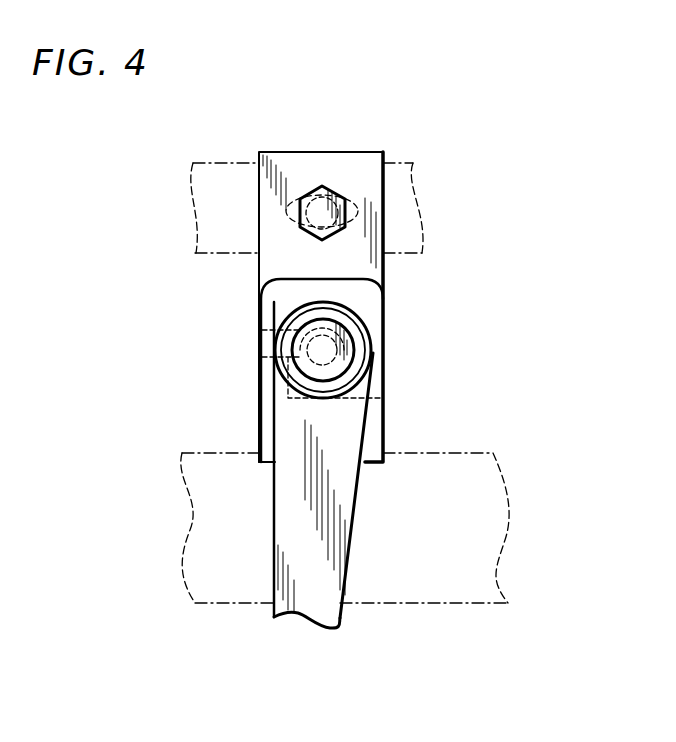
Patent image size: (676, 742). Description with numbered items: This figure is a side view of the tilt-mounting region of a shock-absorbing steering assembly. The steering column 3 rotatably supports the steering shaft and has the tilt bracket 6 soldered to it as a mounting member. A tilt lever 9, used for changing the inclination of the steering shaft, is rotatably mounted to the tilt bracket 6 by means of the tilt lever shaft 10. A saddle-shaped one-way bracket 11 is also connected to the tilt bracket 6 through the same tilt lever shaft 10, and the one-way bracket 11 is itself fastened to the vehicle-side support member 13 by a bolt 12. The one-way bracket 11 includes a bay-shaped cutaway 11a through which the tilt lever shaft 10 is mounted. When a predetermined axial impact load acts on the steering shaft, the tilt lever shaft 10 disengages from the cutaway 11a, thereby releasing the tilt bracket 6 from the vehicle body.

The steering column 3 is at (495, 565).
The tilt bracket 6 is at (373, 308).
The tilt lever 9 is at (302, 602).
The tilt lever shaft 10 is at (263, 358).
The one-way bracket 11 is at (360, 152).
The cutaway 11a is at (300, 356).
The bolt 12 is at (310, 195).
The vehicle-side support member 13 is at (220, 253).